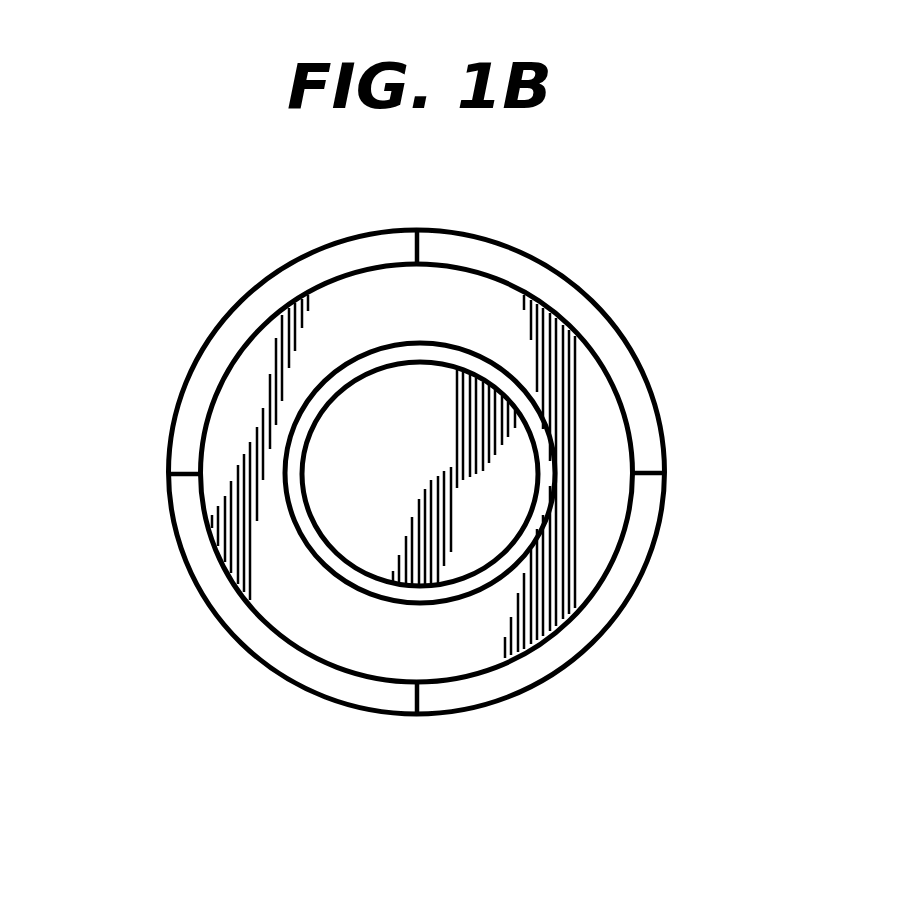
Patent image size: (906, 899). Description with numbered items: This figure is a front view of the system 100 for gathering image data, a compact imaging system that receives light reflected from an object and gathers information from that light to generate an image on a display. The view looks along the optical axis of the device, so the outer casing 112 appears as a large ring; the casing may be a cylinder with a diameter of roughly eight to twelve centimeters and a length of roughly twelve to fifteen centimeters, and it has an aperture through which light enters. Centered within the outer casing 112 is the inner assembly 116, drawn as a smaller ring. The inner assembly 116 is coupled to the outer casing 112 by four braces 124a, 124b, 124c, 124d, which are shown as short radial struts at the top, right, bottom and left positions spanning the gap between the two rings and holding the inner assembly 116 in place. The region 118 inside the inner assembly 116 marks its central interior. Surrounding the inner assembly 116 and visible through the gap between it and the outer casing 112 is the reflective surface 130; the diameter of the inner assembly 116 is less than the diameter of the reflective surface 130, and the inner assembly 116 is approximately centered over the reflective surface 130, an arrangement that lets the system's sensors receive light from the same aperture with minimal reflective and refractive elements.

The system for gathering image data 100 is at (226, 258).
The outer casing 112 is at (233, 638).
The inner assembly 116 is at (373, 347).
The inner lumen 118 is at (417, 494).
The brace 124a is at (418, 228).
The brace 124b is at (652, 478).
The brace 124c is at (406, 711).
The brace 124d is at (170, 470).
The reflective surface 130 is at (590, 557).